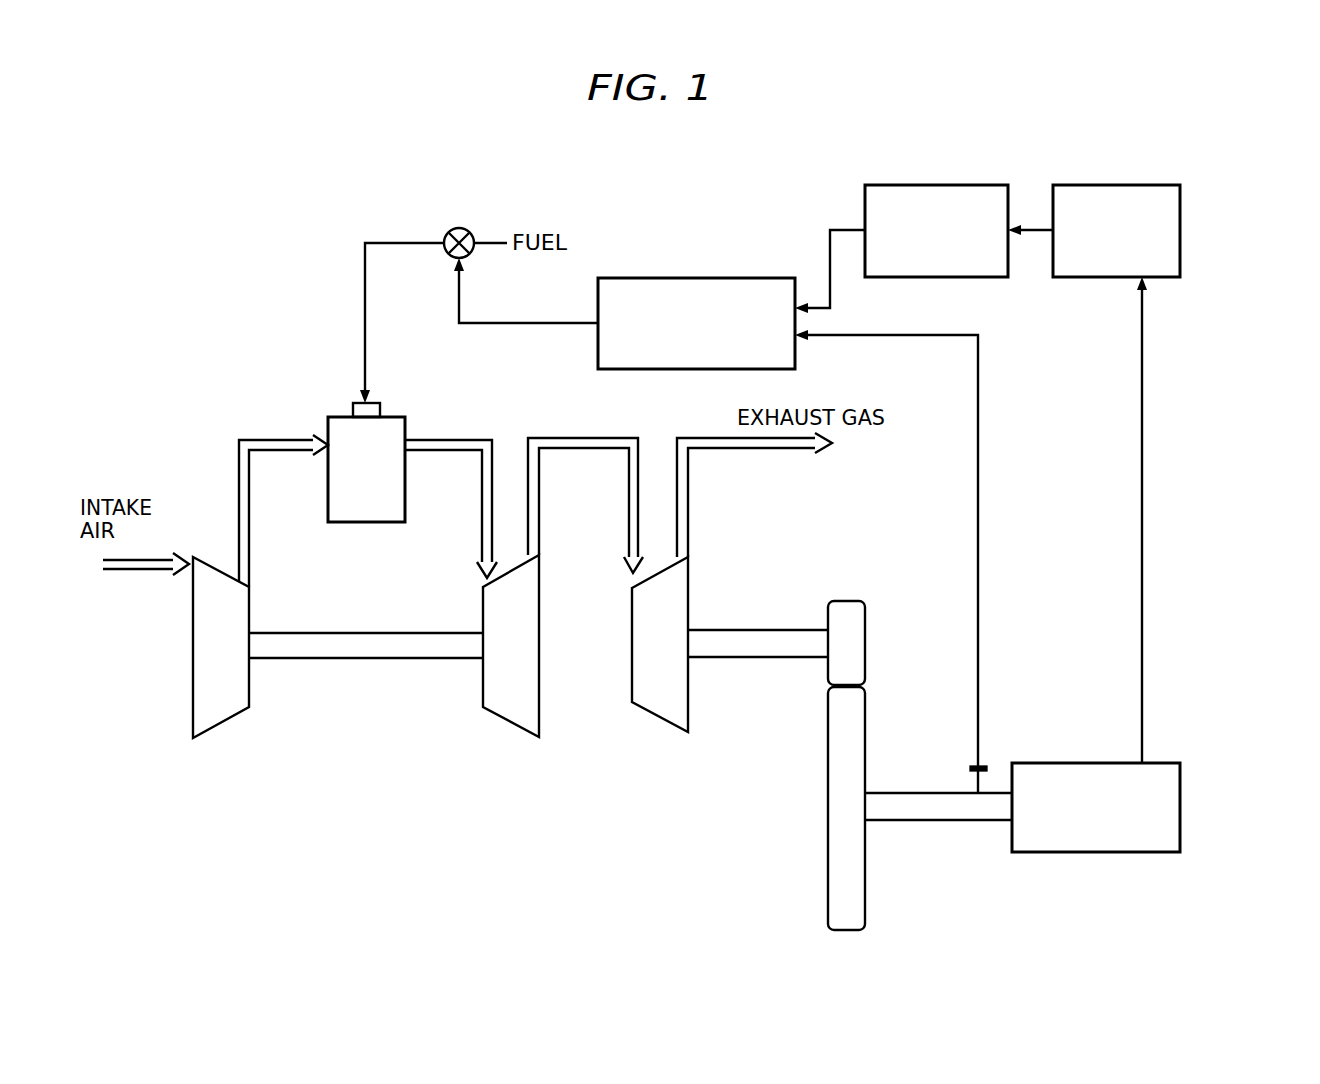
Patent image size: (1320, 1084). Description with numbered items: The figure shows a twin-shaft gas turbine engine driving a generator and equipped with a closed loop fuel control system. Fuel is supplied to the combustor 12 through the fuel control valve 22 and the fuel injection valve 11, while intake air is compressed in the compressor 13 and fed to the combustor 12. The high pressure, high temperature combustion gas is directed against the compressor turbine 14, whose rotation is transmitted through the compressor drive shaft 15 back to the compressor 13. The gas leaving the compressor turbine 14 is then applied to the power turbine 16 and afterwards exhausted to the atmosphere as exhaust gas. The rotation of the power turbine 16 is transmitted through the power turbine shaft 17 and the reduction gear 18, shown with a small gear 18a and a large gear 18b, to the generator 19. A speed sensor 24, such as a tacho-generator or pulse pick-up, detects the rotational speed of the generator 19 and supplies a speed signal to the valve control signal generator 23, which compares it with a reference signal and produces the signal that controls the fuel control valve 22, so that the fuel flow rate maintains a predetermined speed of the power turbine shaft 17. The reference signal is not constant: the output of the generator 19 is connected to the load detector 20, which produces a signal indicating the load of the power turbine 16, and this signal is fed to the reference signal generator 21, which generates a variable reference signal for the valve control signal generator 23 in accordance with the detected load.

The fuel injection valve 11 is at (378, 402).
The combustor 12 is at (340, 522).
The compressor 13 is at (197, 740).
The compressor turbine 14 is at (505, 735).
The compressor drive shaft 15 is at (323, 659).
The power turbine 16 is at (652, 725).
The power turbine shaft 17 is at (717, 630).
The reduction gear 18 is at (805, 753).
The small gear 18a is at (866, 625).
The large gear 18b is at (810, 747).
The generator 19 is at (1180, 783).
The load detector 20 is at (1110, 185).
The reference signal generator 21 is at (935, 185).
The fuel control valve 22 is at (459, 228).
The valve control signal generator 23 is at (715, 278).
The speed sensor 24 is at (985, 765).